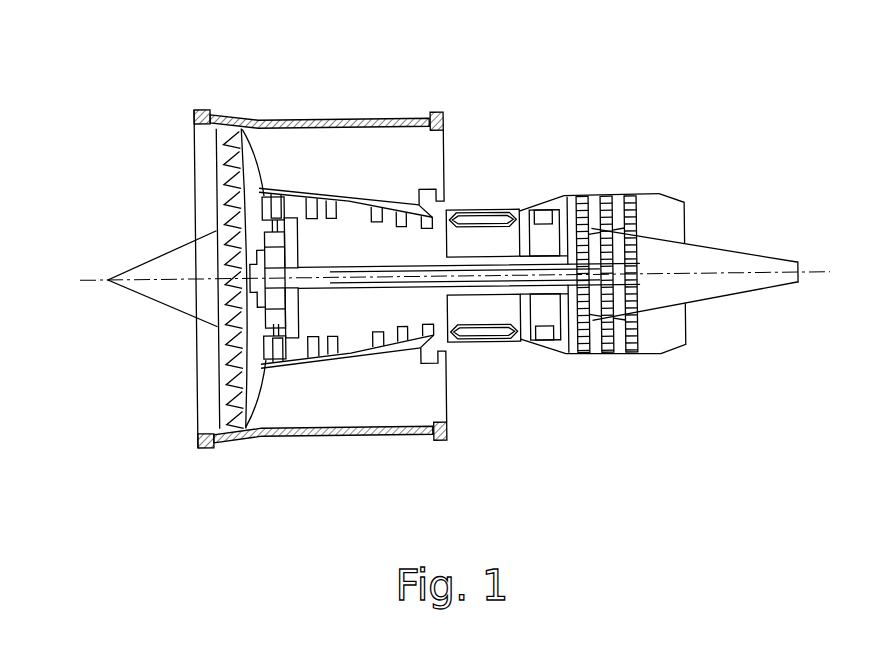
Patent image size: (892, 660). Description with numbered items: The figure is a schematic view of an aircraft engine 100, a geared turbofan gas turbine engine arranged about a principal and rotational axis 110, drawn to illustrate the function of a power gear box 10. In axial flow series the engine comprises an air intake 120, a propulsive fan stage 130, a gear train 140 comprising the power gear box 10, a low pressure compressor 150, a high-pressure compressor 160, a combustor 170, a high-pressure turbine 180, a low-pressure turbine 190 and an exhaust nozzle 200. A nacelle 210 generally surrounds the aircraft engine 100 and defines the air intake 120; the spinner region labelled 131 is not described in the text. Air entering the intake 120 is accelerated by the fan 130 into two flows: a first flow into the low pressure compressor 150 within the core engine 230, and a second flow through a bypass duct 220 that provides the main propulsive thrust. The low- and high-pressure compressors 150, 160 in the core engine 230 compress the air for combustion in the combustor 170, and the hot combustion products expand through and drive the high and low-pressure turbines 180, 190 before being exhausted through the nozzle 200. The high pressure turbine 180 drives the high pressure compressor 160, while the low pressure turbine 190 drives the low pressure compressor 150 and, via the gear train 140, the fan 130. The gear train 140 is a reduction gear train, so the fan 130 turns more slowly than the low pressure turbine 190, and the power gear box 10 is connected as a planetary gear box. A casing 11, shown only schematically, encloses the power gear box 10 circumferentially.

The aircraft engine 100 is at (662, 115).
The principal and rotational axis 110 is at (92, 279).
The air intake 120 is at (190, 138).
The propulsive fan stage 130 is at (233, 367).
The spinner cone 131 is at (160, 268).
The power gear box 10 is at (265, 345).
The casing 11 is at (270, 200).
The gear train 140 is at (265, 290).
The low pressure compressor 150 is at (417, 208).
The high-pressure compressor 160 is at (437, 238).
The combustor 170 is at (488, 330).
The high-pressure turbine 180 is at (523, 210).
The low-pressure turbine 190 is at (605, 210).
The exhaust nozzle 200 is at (673, 213).
The nacelle 210 is at (347, 122).
The bypass duct 220 is at (440, 148).
The core engine 230 is at (414, 200).